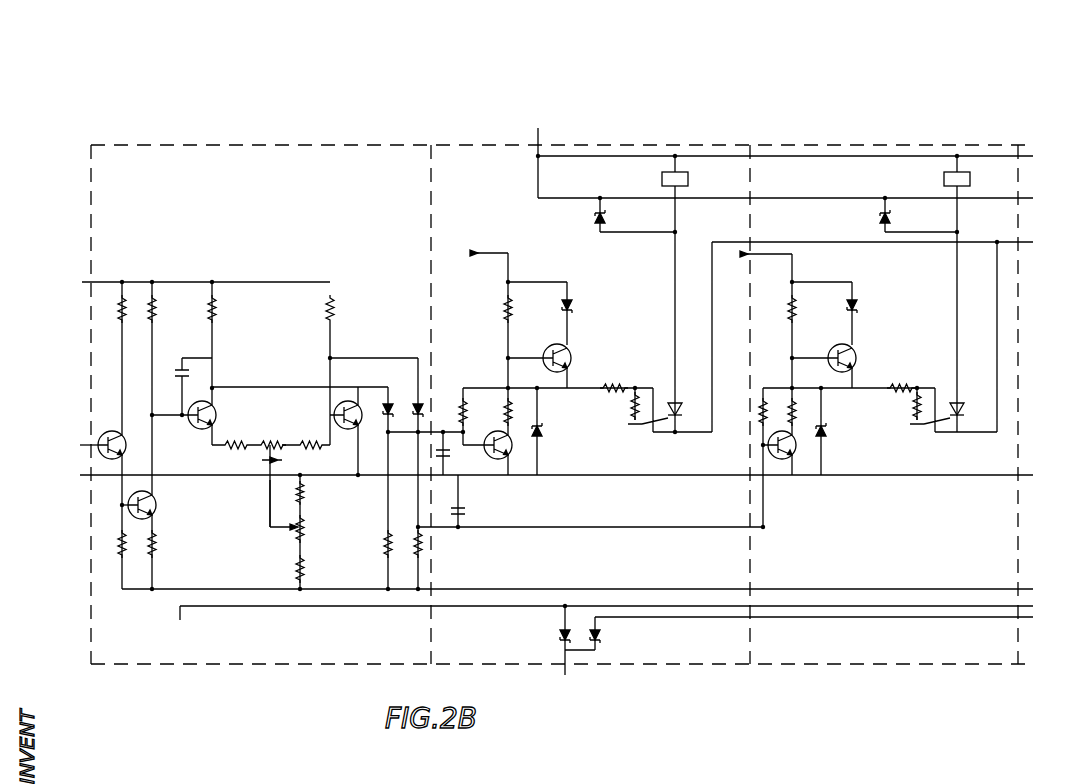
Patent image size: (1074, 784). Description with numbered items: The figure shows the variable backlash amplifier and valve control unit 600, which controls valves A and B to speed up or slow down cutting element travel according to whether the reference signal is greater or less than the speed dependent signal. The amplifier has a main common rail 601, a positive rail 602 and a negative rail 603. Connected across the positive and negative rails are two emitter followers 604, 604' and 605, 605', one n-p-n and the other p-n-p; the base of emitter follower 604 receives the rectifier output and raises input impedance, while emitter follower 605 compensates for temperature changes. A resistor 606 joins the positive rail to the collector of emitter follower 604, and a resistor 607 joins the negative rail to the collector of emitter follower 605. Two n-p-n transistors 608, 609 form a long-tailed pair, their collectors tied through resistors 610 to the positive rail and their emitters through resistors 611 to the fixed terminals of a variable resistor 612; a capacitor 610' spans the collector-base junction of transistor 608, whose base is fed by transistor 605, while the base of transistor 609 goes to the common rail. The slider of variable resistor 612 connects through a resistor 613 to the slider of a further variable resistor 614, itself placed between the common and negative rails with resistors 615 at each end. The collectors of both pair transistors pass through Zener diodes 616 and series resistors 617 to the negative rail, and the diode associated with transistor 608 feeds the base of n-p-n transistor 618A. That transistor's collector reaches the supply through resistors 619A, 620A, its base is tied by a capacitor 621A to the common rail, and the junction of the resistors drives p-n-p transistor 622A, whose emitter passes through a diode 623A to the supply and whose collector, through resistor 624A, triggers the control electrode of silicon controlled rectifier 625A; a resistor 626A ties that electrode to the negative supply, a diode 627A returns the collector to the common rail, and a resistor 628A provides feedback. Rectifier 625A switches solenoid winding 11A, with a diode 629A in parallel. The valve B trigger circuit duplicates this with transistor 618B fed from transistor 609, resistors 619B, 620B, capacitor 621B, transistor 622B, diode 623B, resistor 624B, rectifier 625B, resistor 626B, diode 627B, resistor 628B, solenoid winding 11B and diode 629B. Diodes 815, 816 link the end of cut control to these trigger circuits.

The variable backlash amplifier and valve control unit 600 is at (562, 417).
The main common rail 601 is at (172, 477).
The positive rail 602 is at (206, 271).
The negative rail 603 is at (577, 577).
The emitter follower 604 is at (78, 430).
The emitter follower 604' is at (77, 544).
The emitter follower 605 is at (165, 509).
The emitter follower 605' is at (173, 280).
The resistor 606 is at (115, 308).
The resistor 607 is at (158, 552).
The transistor 608 is at (214, 400).
The transistor 609 is at (350, 401).
The resistors 610 is at (296, 298).
The capacitor 610' is at (176, 352).
The resistors 611 is at (233, 441).
The variable resistor 612 is at (269, 442).
The resistor 613 is at (268, 502).
The variable resistor 614 is at (305, 530).
The resistors 615 is at (305, 495).
The Zener diodes 616 is at (420, 398).
The series resistors 617 is at (383, 544).
The transistor 618A is at (510, 458).
The transistor 618B is at (795, 460).
The resistor 619A is at (505, 405).
The resistor 619B is at (797, 405).
The resistor 620A is at (503, 306).
The resistor 620B is at (797, 318).
The capacitor 621A is at (451, 453).
The capacitor 621B is at (467, 512).
The transistor 622A is at (572, 350).
The transistor 622B is at (857, 350).
The diode 623A is at (573, 306).
The diode 623B is at (858, 306).
The resistor 624A is at (613, 385).
The resistor 624B is at (895, 385).
The silicon controlled rectifier 625A is at (690, 427).
The silicon controlled rectifier 625B is at (965, 408).
The resistor 626A is at (630, 403).
The resistor 626B is at (912, 405).
The diode 627A is at (542, 432).
The diode 627B is at (826, 432).
The resistor 628A is at (460, 405).
The resistor 628B is at (760, 410).
The diode 629A is at (594, 218).
The diode 629B is at (880, 218).
The solenoid winding 11A is at (688, 179).
The solenoid winding 11B is at (970, 180).
The diode 815 is at (560, 637).
The diode 816 is at (604, 637).